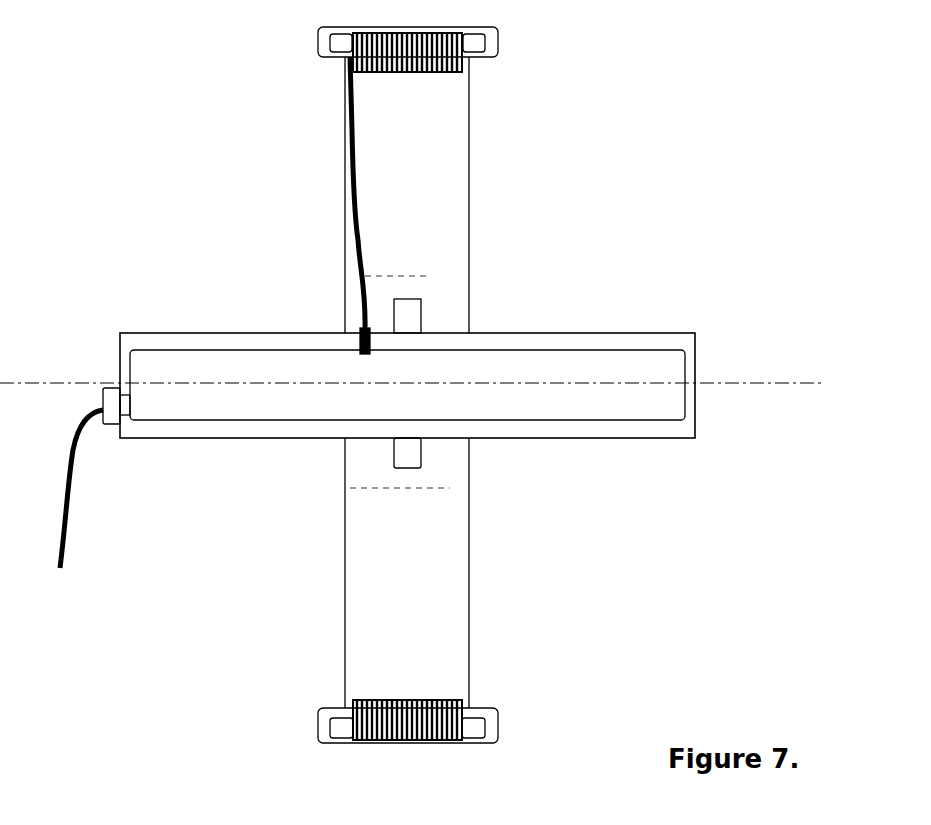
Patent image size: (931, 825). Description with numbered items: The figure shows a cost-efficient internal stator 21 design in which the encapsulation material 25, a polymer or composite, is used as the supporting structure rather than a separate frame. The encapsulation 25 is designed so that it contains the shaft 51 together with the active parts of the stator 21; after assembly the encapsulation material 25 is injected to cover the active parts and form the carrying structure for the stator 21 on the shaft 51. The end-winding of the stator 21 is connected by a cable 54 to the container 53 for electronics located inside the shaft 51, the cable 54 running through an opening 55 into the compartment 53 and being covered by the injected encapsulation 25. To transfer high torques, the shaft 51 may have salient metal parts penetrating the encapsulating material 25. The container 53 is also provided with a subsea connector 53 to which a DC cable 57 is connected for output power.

The internal stator 21 is at (500, 57).
The encapsulation material 25 is at (472, 166).
The shaft 51 is at (247, 430).
The container for electronics 53 is at (108, 384).
The cable 54 is at (345, 173).
The opening 55 is at (358, 330).
The DC cable 57 is at (68, 562).